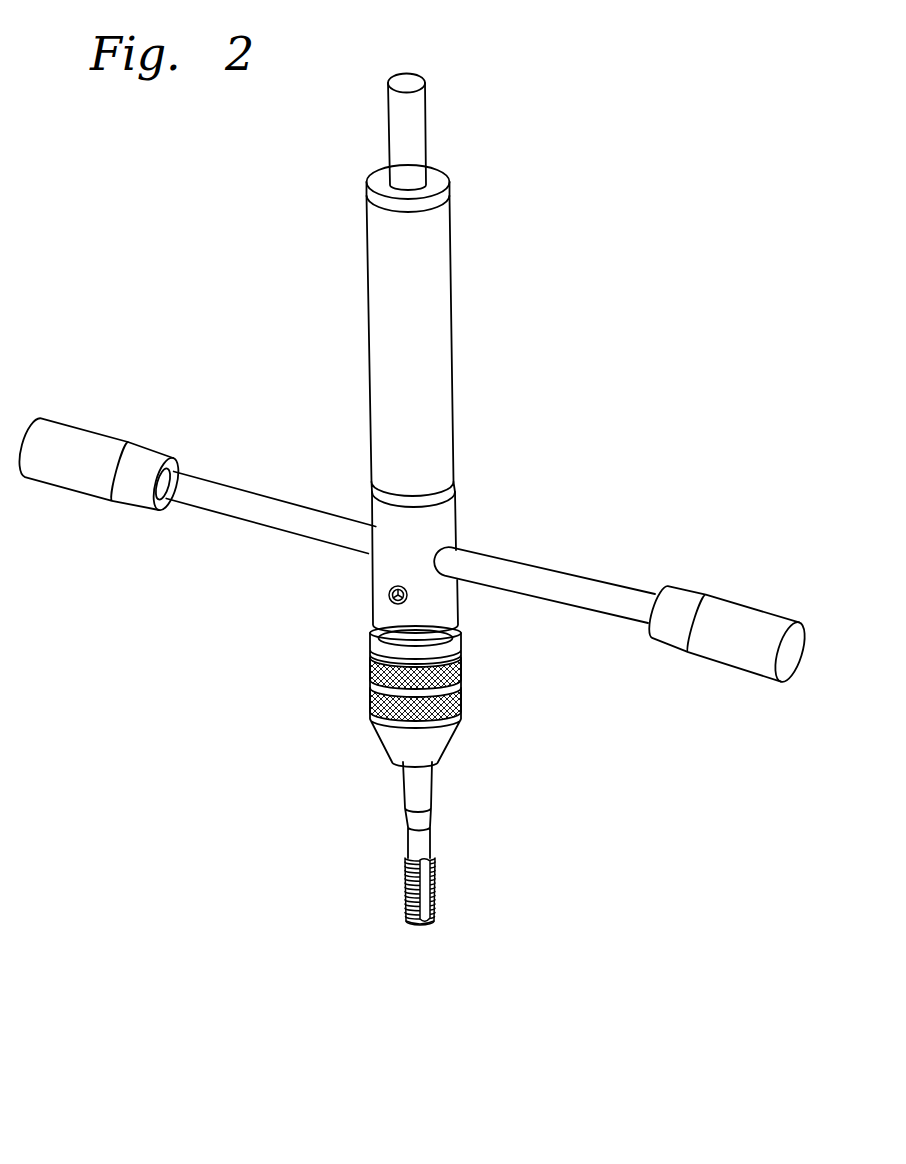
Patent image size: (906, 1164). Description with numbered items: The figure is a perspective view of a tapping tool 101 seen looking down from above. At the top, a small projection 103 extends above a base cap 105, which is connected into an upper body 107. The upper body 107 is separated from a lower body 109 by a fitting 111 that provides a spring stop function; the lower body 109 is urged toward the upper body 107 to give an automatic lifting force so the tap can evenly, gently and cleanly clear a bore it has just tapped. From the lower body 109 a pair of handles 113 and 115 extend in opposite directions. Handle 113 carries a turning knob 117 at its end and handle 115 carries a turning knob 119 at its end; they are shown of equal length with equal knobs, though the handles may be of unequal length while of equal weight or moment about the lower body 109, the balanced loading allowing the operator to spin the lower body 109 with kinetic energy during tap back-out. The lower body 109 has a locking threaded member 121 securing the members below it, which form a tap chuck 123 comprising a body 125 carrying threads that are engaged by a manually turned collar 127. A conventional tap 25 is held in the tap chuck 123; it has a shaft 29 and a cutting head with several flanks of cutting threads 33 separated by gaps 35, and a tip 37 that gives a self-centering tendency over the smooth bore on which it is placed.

The tapping tool 101 is at (210, 242).
The small projection 103 is at (417, 110).
The base cap 105 is at (438, 180).
The upper body 107 is at (447, 318).
The lower body 109 is at (450, 518).
The fitting 111 is at (452, 492).
The handle 113 is at (215, 483).
The handle 115 is at (512, 563).
The turning knob 117 is at (70, 428).
The turning knob 119 is at (723, 607).
The locking threaded member 121 is at (388, 600).
The tap chuck 123 is at (402, 692).
The body 125 is at (388, 643).
The collar 127 is at (388, 702).
The shaft 29 is at (432, 792).
The tap 25 is at (436, 881).
The cutting threads 33 is at (407, 893).
The gaps 35 is at (423, 923).
The tip 37 is at (418, 926).